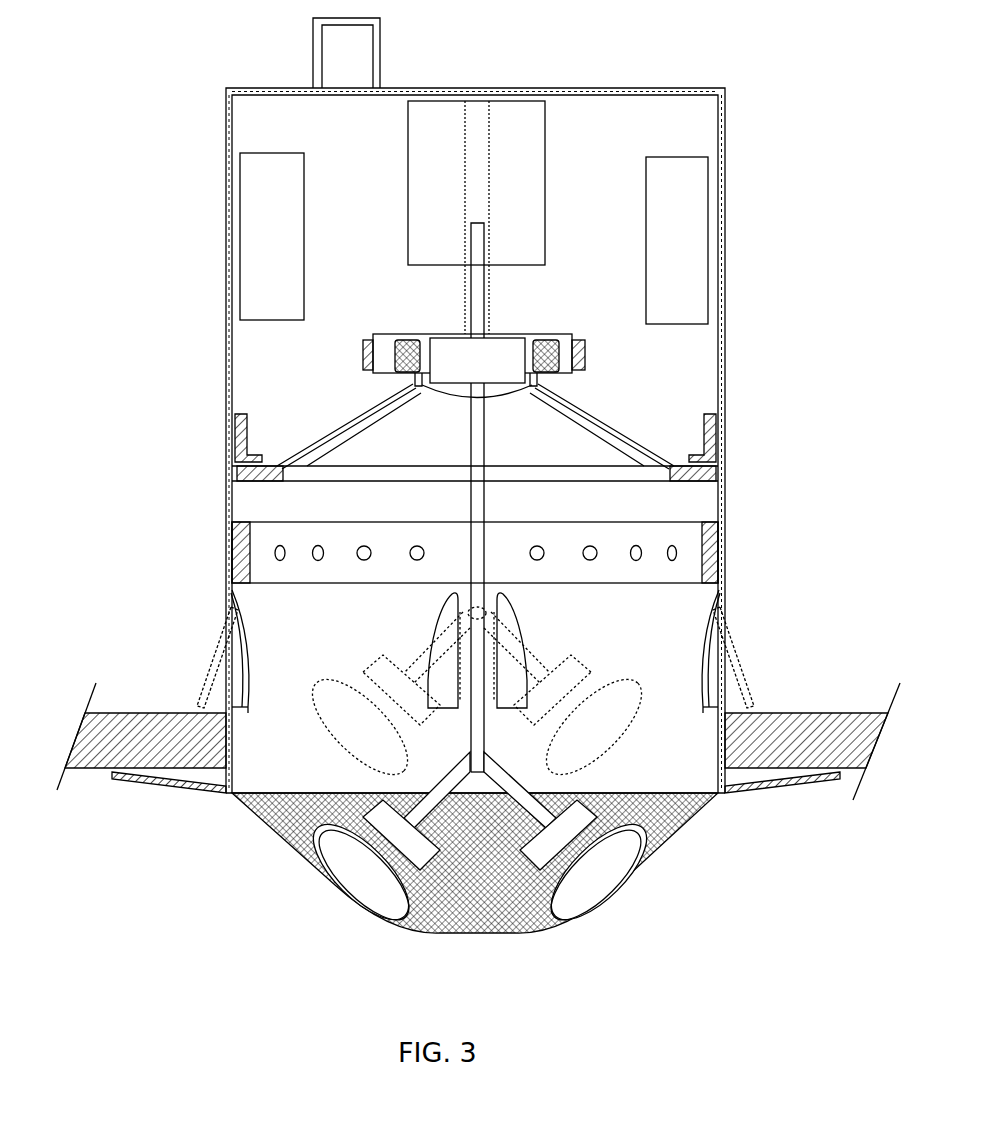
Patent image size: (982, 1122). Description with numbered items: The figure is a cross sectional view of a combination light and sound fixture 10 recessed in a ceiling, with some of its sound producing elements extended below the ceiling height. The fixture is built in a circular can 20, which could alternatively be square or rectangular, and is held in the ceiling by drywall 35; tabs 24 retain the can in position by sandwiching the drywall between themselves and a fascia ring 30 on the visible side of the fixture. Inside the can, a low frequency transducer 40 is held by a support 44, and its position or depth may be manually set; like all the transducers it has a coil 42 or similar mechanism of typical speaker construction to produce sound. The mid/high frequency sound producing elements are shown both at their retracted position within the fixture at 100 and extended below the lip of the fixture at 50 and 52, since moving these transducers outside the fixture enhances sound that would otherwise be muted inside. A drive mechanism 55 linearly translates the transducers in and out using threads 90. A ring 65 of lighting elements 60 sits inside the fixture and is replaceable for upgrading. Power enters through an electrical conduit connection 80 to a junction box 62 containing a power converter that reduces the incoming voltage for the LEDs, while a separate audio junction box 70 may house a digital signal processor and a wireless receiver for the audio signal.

The combination light and sound fixture 10 is at (772, 44).
The can 20 is at (726, 128).
The tabs 24 is at (733, 652).
The fascia ring 30 is at (755, 793).
The drywall 35 is at (160, 711).
The low frequency transducer 40 is at (323, 432).
The coil 42 is at (560, 353).
The support 44 is at (706, 468).
The mid/high frequency sound producing element extended below the lip 50 is at (345, 896).
The mid/high frequency sound producing element extended below the lip 52 is at (545, 920).
The drive mechanism 55 is at (531, 128).
The lighting elements 60 is at (314, 552).
The junction box 62 is at (710, 245).
The ring of lighting elements 65 is at (238, 530).
The audio junction box 70 is at (240, 213).
The electrical conduit connection 80 is at (313, 65).
The threads 90 is at (469, 294).
The mid/high frequency sound producing elements within the fixture 100 is at (340, 756).